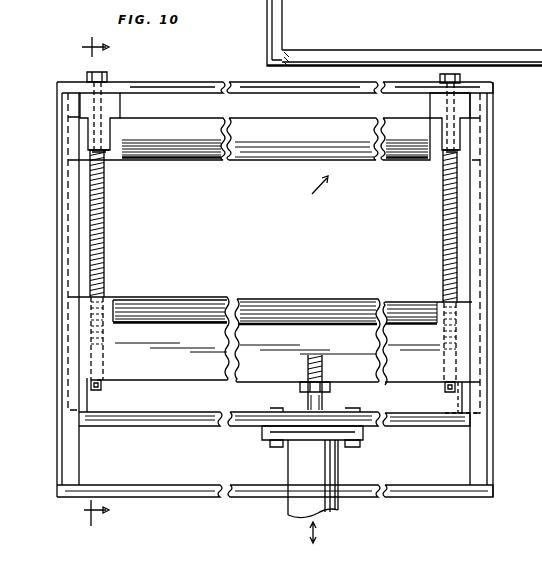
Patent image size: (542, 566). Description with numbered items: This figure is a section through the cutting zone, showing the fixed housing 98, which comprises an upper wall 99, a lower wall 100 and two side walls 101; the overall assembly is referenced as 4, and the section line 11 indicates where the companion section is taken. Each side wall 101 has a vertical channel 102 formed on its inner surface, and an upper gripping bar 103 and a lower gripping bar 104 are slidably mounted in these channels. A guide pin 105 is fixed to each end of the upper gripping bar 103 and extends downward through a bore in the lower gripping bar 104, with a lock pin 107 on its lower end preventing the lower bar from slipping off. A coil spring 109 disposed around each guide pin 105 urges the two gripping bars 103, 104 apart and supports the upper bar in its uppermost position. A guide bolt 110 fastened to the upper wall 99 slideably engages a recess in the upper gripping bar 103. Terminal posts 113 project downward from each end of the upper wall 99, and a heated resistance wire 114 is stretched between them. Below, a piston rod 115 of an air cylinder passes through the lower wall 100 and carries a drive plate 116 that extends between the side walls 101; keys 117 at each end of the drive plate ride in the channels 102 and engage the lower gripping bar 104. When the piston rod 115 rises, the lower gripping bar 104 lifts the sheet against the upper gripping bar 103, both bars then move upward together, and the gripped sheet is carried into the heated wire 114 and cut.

The lift assembly 4 is at (315, 188).
The section line 11- 11 is at (92, 283).
The fixed housing 98 is at (225, 78).
The upper wall 99 is at (174, 82).
The lower wall 100 is at (216, 486).
The side walls 101 is at (62, 94).
The vertical channel 102 is at (66, 204).
The upper gripping bar 103 is at (295, 136).
The lower gripping bar 104 is at (318, 354).
The guide pin 105 is at (105, 222).
The lock pin 107 is at (101, 386).
The coil spring 109 is at (105, 260).
The guide bolt 110 is at (106, 81).
The terminal posts 113 is at (110, 130).
The wire 114 is at (186, 141).
The piston rod 115 is at (292, 464).
The drive plate 116 is at (196, 414).
The keys 117 is at (85, 403).